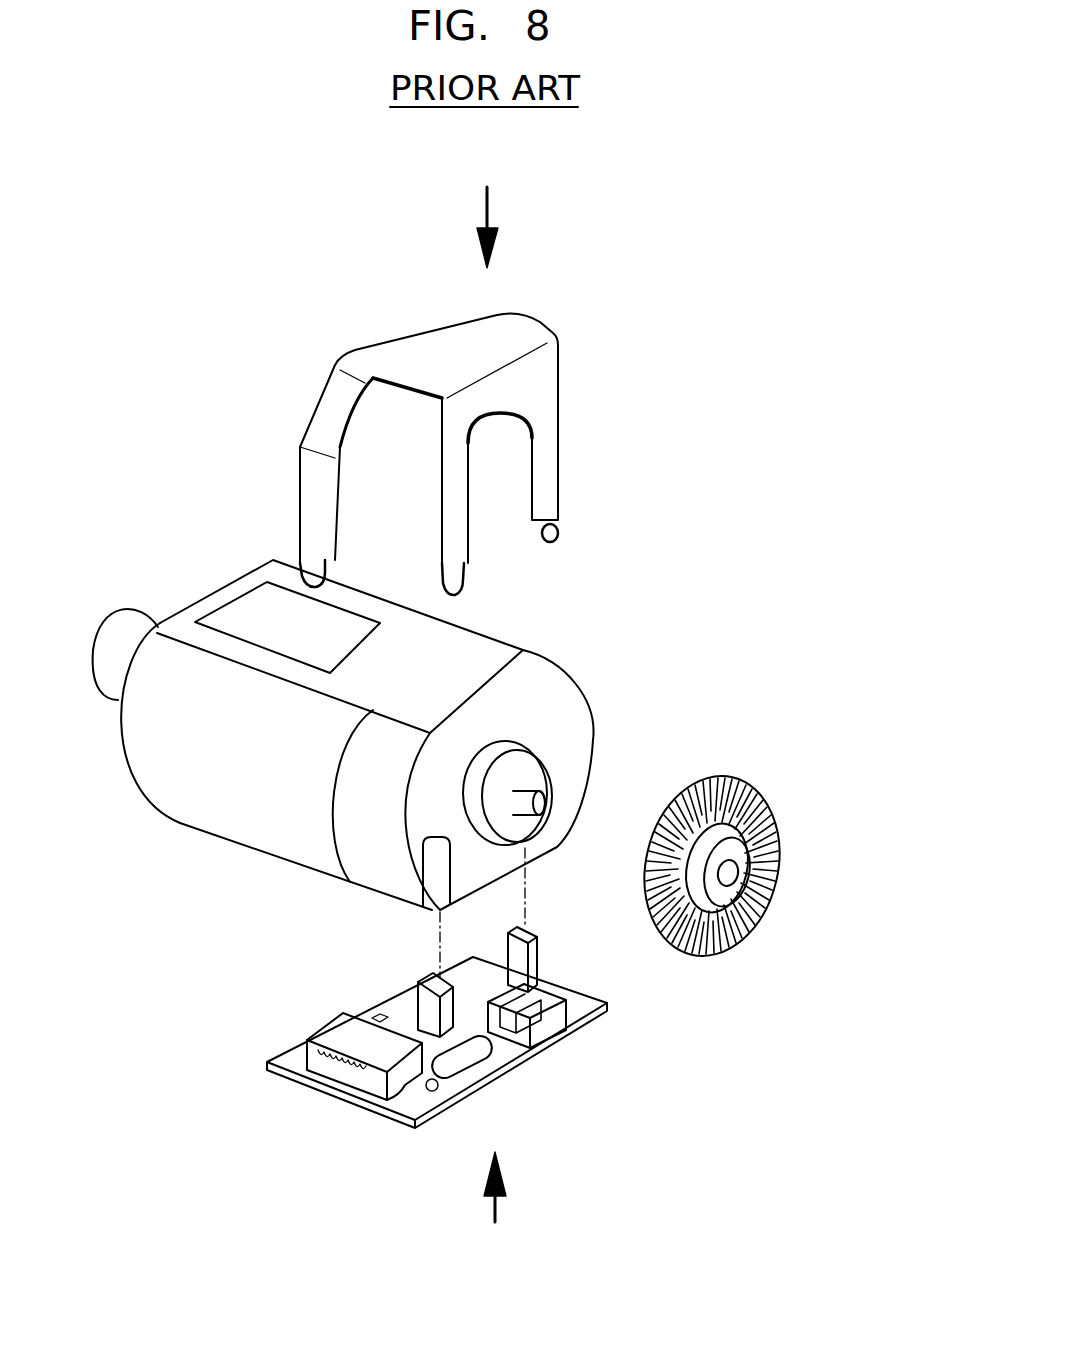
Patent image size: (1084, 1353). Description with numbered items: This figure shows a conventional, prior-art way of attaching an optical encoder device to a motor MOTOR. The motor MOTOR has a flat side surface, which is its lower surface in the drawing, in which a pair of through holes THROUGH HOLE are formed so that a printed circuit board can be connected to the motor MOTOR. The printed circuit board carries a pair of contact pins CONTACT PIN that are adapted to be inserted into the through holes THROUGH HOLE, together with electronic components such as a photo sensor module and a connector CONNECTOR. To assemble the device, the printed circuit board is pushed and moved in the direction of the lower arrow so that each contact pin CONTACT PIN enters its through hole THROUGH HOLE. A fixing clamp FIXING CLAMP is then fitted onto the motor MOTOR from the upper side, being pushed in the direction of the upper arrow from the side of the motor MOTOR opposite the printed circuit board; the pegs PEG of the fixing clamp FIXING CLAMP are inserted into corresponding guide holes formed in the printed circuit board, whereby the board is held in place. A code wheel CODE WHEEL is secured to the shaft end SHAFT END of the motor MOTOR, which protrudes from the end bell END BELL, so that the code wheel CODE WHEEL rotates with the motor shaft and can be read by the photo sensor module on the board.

The fixing clamp FIXING CLAMP is at (543, 362).
The peg PEG is at (560, 528).
The motor MOTOR is at (183, 830).
The end bell END BELL is at (523, 650).
The shaft end SHAFT END is at (540, 790).
The through hole THROUGH HOLE is at (433, 872).
The code wheel CODE WHEEL is at (840, 748).
The connector CONNECTOR is at (358, 1070).
The contact pin CONTACT PIN is at (527, 957).